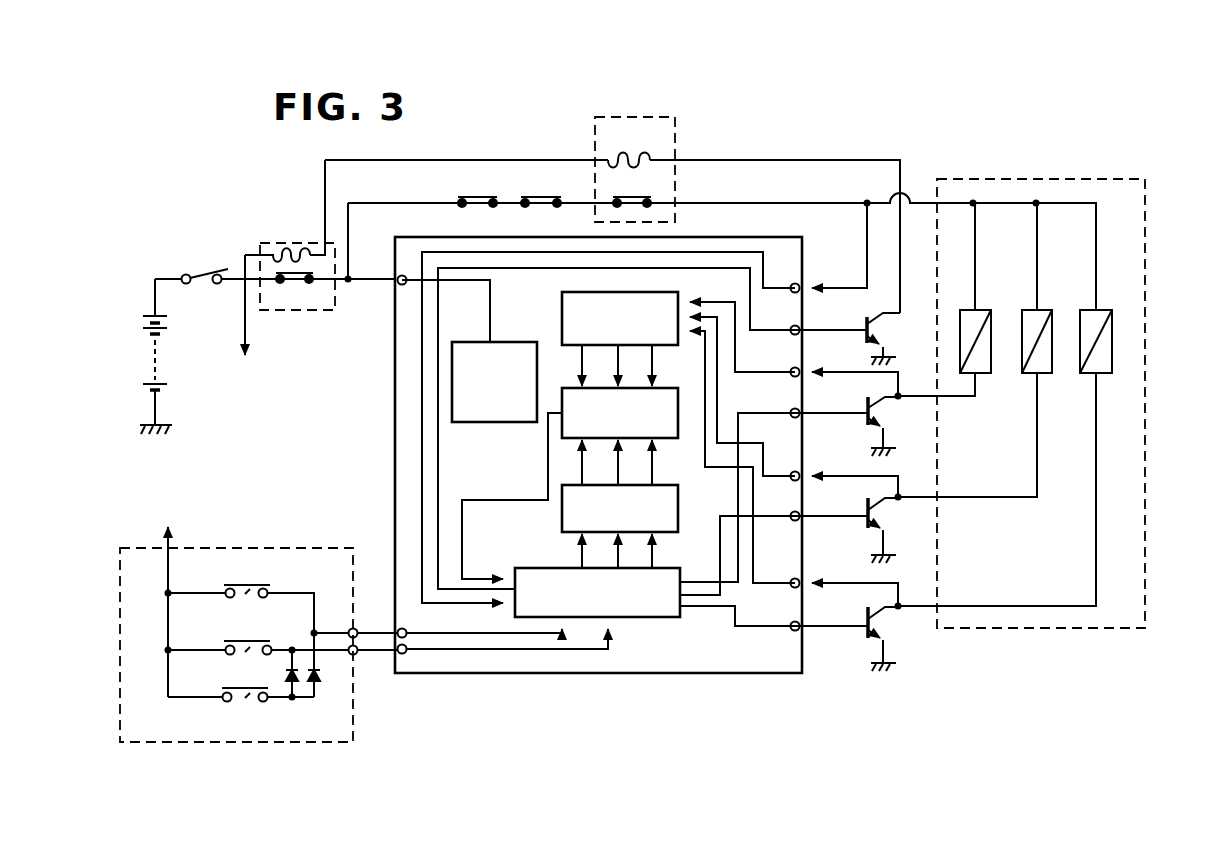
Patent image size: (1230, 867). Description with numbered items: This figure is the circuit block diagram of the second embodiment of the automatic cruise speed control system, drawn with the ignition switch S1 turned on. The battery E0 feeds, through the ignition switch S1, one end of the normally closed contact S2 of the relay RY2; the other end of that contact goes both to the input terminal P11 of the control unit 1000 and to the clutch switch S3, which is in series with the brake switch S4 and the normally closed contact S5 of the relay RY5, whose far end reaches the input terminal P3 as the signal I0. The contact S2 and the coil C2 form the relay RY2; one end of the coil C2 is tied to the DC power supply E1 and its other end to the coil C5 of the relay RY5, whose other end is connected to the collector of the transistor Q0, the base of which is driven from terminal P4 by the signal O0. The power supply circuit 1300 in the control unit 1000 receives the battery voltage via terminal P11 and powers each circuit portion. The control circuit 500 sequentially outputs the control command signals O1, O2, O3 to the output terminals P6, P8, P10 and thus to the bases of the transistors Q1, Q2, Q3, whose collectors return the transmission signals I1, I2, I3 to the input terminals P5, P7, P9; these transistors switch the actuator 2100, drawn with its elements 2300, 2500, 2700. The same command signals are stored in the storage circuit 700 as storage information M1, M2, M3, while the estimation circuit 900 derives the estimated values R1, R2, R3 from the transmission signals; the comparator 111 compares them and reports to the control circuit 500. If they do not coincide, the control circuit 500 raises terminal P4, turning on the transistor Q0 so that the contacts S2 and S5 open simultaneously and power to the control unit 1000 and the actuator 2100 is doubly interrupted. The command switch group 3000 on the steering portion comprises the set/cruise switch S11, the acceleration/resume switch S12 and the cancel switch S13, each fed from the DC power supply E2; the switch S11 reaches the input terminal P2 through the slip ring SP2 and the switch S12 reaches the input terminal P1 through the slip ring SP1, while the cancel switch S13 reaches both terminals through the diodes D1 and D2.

The battery E0 is at (150, 336).
The ignition switch S1 is at (204, 292).
The relay RY2 is at (314, 311).
The coil C2 is at (293, 248).
The contact S2 is at (294, 286).
The DC power supply E1 is at (243, 327).
The relay RY5 is at (676, 140).
The coil C5 is at (630, 158).
The contact S5 is at (632, 210).
The clutch switch S3 is at (476, 210).
The brake switch S4 is at (540, 210).
The control unit 1000 is at (745, 674).
The input terminal P11 is at (390, 292).
The power supply circuit 1300 is at (510, 341).
The estimation circuit 900 is at (690, 286).
The comparator 111 is at (665, 439).
The storage circuit 700 is at (679, 492).
The control circuit 500 is at (655, 618).
The estimated value R1 is at (578, 362).
The estimated value R2 is at (622, 372).
The estimated value R3 is at (655, 372).
The storage information M1 is at (601, 464).
The storage information M2 is at (633, 464).
The storage information M3 is at (647, 472).
The output signal O0 is at (822, 333).
The control command signal O1 is at (578, 553).
The control command signal O2 is at (616, 560).
The control command signal O3 is at (655, 560).
The input terminal P1 is at (406, 653).
The input terminal P2 is at (406, 630).
The input terminal P3 is at (782, 300).
The output terminal P4 is at (786, 340).
The input terminal P5 is at (786, 382).
The output terminal P6 is at (788, 421).
The input terminal P7 is at (788, 484).
The output terminal P8 is at (788, 524).
The input terminal P9 is at (788, 591).
The output terminal P10 is at (788, 634).
The input signal I0 is at (868, 268).
The transmission signal I1 is at (822, 375).
The transmission signal I2 is at (858, 480).
The transmission signal I3 is at (858, 587).
The transistor Q0 is at (870, 330).
The transistor Q1 is at (870, 412).
The transistor Q2 is at (870, 514).
The transistor Q3 is at (870, 623).
The actuator 2100 is at (1034, 179).
The load 2300 is at (985, 372).
The load 2500 is at (1046, 372).
The load 2700 is at (1108, 314).
The command switch group 3000 is at (258, 548).
The DC power supply E2 is at (169, 541).
The set/cruise switch S11 is at (236, 601).
The acceleration/resume switch S12 is at (236, 660).
The cancel switch S13 is at (236, 705).
The diode D1 is at (329, 676).
The diode D2 is at (278, 673).
The slip ring SP1 is at (356, 655).
The slip ring SP2 is at (356, 628).